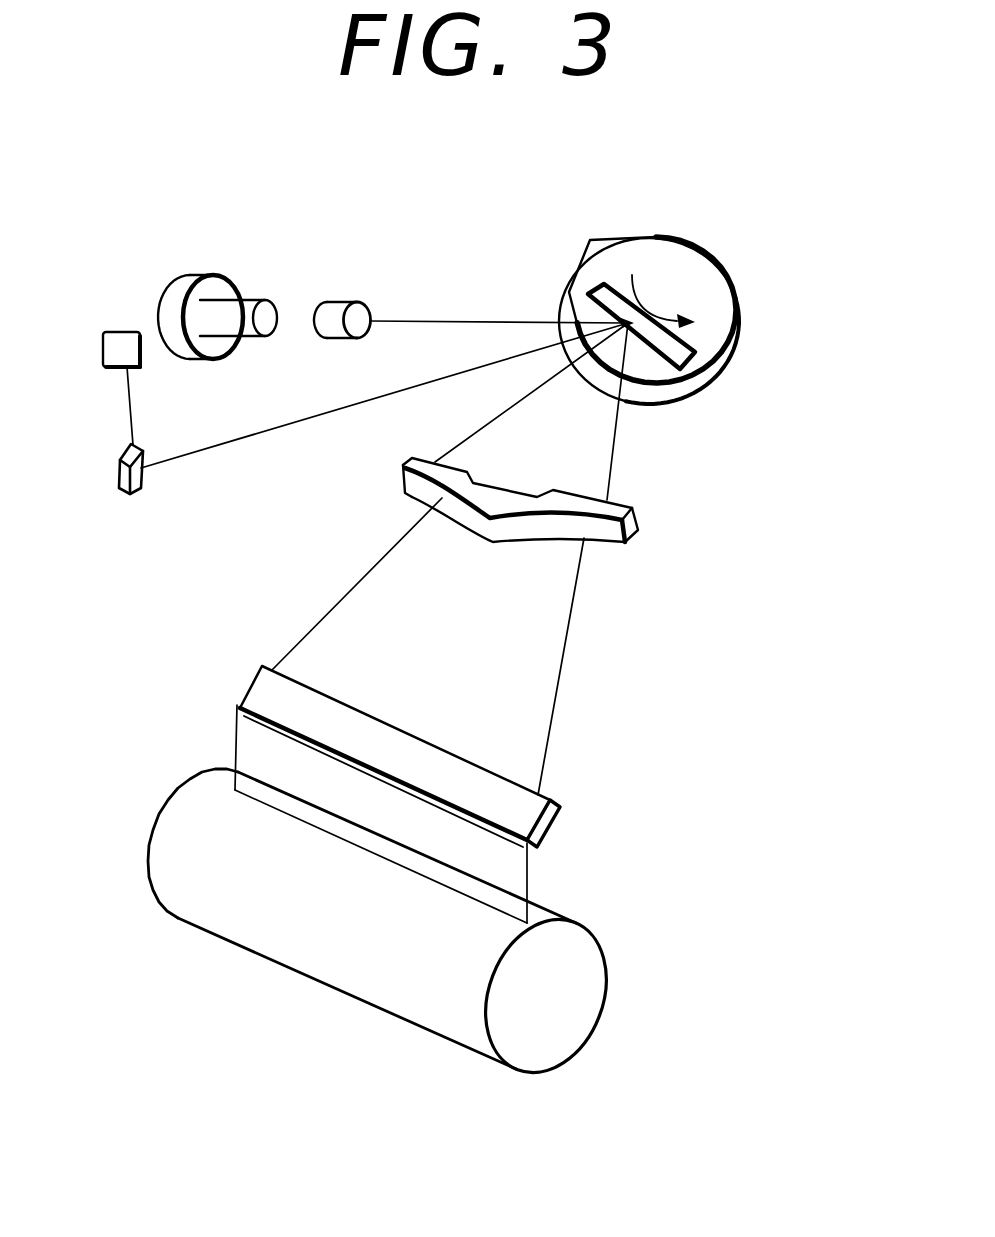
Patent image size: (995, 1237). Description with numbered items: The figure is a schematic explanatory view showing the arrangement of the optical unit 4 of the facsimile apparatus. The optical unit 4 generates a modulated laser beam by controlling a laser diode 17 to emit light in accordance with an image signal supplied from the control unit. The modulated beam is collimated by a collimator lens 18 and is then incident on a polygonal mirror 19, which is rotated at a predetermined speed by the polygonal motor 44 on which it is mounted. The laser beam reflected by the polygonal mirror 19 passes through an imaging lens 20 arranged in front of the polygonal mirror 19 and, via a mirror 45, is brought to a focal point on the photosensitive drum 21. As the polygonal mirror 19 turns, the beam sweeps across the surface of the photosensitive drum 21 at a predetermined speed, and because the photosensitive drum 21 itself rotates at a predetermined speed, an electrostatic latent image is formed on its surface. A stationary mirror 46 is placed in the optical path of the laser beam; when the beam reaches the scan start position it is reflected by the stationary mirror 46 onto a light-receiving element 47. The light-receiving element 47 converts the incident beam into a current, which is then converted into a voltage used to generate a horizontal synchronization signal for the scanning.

The optical unit 4 is at (800, 568).
The laser diode 17 is at (190, 283).
The collimator lens 18 is at (337, 307).
The polygonal mirror 19 is at (690, 287).
The imaging lens 20 is at (590, 527).
The photosensitive drum 21 is at (585, 1003).
The polygonal motor 44 is at (694, 396).
The mirror 45 is at (556, 832).
The stationary mirror 46 is at (120, 480).
The light-receiving element 47 is at (123, 332).